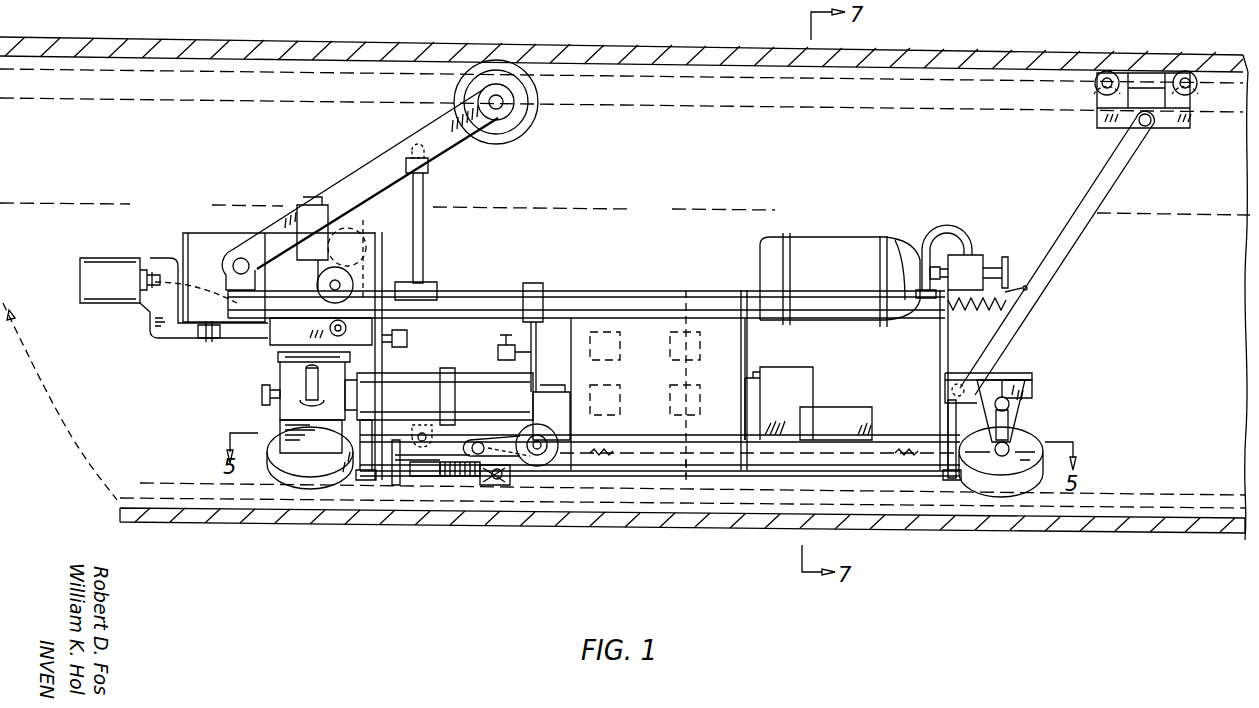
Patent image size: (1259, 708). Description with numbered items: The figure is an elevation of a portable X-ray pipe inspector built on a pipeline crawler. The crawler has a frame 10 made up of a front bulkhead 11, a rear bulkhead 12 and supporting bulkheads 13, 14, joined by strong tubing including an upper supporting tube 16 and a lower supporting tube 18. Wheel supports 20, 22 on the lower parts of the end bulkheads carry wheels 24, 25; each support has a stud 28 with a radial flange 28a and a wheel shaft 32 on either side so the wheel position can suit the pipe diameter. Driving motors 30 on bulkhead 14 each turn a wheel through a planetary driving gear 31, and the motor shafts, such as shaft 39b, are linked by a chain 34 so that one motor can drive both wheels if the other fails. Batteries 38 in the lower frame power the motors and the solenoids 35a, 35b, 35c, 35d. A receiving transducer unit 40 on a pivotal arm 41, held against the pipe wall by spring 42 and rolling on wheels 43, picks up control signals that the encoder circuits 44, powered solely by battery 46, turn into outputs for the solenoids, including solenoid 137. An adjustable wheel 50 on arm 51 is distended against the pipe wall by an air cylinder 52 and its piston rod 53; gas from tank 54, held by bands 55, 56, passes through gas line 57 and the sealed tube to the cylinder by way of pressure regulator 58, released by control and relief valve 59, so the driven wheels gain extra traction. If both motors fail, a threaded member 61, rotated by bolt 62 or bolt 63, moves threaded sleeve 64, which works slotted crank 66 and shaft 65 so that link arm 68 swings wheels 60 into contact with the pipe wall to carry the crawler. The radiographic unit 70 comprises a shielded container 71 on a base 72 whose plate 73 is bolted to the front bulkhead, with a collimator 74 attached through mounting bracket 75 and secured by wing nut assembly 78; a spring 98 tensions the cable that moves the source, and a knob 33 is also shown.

The frame 10 is at (640, 280).
The front bulkhead 11 is at (368, 212).
The rear bulkhead 12 is at (947, 368).
The supporting bulkhead 13 is at (742, 293).
The supporting bulkhead 14 is at (540, 300).
The supporting tube 16 is at (599, 295).
The supporting tube 18 is at (777, 455).
The wheel support 20 is at (1035, 393).
The wheel support 22 is at (300, 420).
The wheel 24 is at (1028, 482).
The wheel 25 is at (302, 483).
The stud 28 is at (1015, 375).
The flange 28a is at (1020, 412).
The driving motor 30 is at (485, 375).
The planetary driving gear 31 is at (395, 445).
The wheel shaft 32 is at (305, 385).
The adjusting knob 33 is at (262, 392).
The chain 34 is at (270, 408).
The solenoid 35a is at (615, 358).
The solenoid 35b is at (686, 330).
The solenoid 35c is at (620, 408).
The solenoid 35d is at (690, 430).
The batteries 38 is at (580, 412).
The motor shaft 39b is at (260, 418).
The receiving transducer unit 40 is at (1183, 108).
The arm 41 is at (1110, 176).
The spring 42 is at (985, 318).
The wheels 43 is at (1184, 73).
The encoder circuits 44 is at (860, 418).
The battery 46 is at (795, 380).
The adjustable wheel 50 is at (497, 62).
The arm 51 is at (450, 105).
The air cylinder 52 is at (437, 290).
The piston rod 53 is at (425, 208).
The tank 54 is at (835, 246).
The band 55 is at (960, 212).
The band 56 is at (786, 242).
The gas line 57 is at (959, 236).
The pressure regulator 58 is at (516, 360).
The control and relief valve 59 is at (988, 258).
The wheels 60 is at (542, 465).
The threaded member 61 is at (460, 475).
The bolt 62 is at (365, 462).
The bolt 63 is at (955, 472).
The threaded sleeve 64 is at (503, 468).
The shaft 65 is at (440, 458).
The slotted crank 66 is at (490, 485).
The link arm 68 is at (512, 470).
The radiographic unit 70 is at (98, 312).
The shielded container 71 is at (285, 201).
The base 72 is at (292, 340).
The plate 73 is at (352, 220).
The collimator 74 is at (80, 284).
The mounting bracket 75 is at (160, 332).
The wing nut assembly 78 is at (150, 270).
The spring 98 is at (883, 470).
The solenoid 137 is at (402, 340).